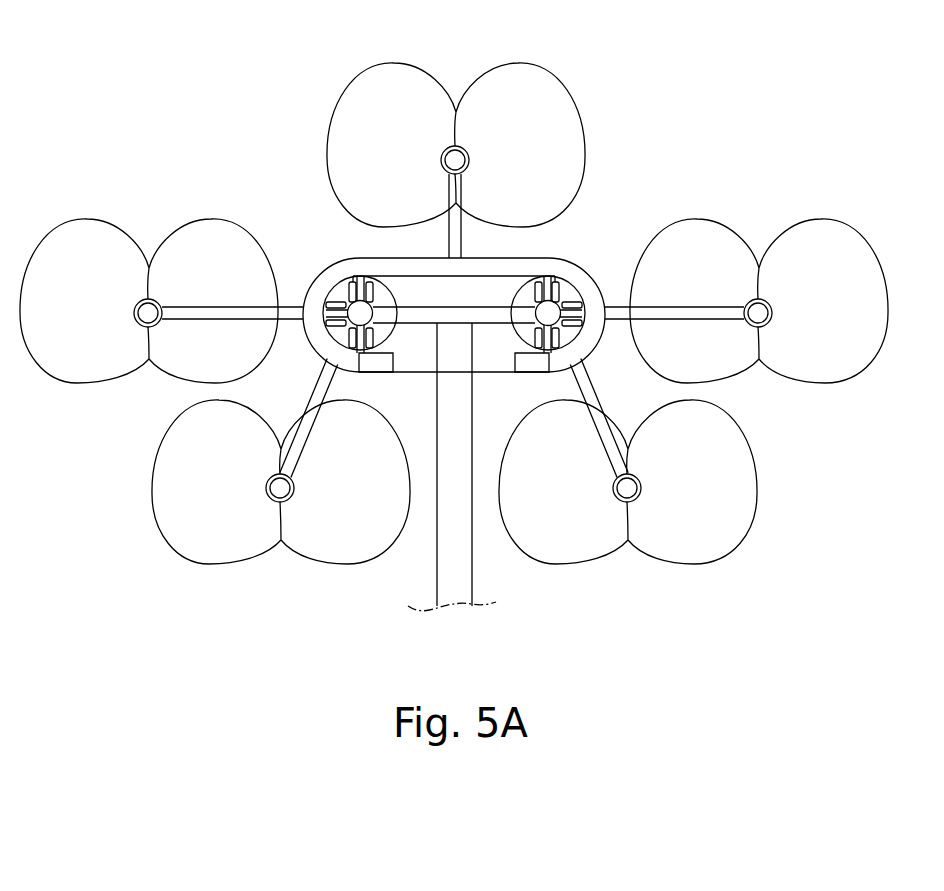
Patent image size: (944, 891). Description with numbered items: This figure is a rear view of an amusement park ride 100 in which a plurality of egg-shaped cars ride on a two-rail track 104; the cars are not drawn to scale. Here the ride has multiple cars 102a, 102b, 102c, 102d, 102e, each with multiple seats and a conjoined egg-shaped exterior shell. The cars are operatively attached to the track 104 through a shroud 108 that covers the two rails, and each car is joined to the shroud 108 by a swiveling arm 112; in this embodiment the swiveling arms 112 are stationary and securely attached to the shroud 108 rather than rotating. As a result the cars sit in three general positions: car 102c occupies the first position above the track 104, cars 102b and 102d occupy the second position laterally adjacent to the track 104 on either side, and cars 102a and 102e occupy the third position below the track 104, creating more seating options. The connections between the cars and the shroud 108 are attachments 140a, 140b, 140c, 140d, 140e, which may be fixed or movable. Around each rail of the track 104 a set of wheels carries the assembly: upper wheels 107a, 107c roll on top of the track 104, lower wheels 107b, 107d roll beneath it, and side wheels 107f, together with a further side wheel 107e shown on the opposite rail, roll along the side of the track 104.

The amusement park ride 100 is at (231, 55).
The car 102a is at (160, 493).
The car 102b is at (192, 230).
The car 102c is at (578, 134).
The car 102d is at (795, 232).
The car 102e is at (745, 483).
The track 104 is at (375, 312).
The upper wheel 107a is at (547, 290).
The lower wheel 107b is at (546, 338).
The upper wheel 107c is at (358, 290).
The lower wheel 107d is at (362, 338).
The clip 107e is at (574, 315).
The side wheel 107f is at (334, 315).
The shroud 108 is at (593, 280).
The swiveling arm 112 is at (449, 246).
The attachment 140a is at (288, 502).
The attachment 140b is at (143, 303).
The attachment 140c is at (450, 147).
The attachment 140d is at (752, 300).
The attachment 140e is at (619, 502).